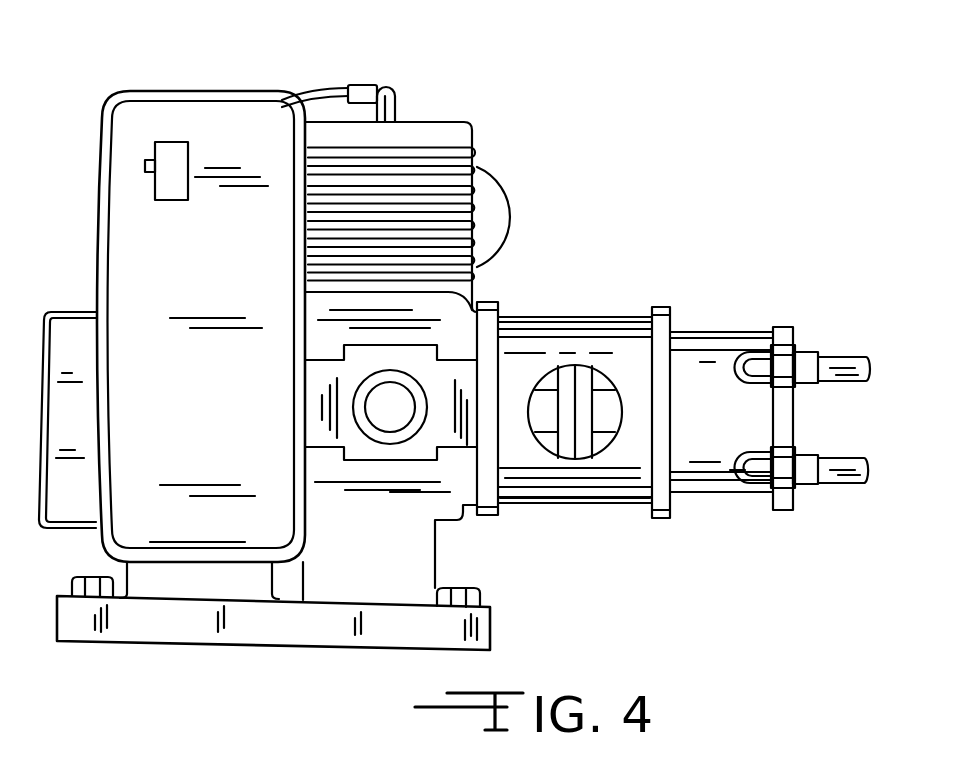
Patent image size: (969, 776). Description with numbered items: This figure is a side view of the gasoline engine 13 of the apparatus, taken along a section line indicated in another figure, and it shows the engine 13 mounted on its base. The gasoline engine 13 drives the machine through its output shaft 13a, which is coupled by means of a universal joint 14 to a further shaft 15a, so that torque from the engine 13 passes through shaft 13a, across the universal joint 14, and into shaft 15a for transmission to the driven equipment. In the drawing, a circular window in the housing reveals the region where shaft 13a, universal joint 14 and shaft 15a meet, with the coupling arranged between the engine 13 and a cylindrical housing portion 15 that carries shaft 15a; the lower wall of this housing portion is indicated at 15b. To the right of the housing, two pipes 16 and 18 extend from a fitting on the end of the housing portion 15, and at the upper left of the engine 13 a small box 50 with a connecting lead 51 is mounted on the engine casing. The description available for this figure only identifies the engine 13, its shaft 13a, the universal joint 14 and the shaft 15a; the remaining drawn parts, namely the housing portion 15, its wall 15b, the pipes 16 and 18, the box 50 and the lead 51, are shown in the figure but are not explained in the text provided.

The gasoline engine 13 is at (450, 135).
The shaft 13a is at (545, 405).
The universal joint 14 is at (576, 388).
The pump cylinder 15 is at (710, 355).
The shaft 15a is at (609, 405).
The cylinder bottom wall 15b is at (573, 505).
The discharge pipe 16 is at (845, 365).
The suction pipe 18 is at (837, 484).
The switch box 50 is at (147, 165).
The switch lead connector 51 is at (147, 167).